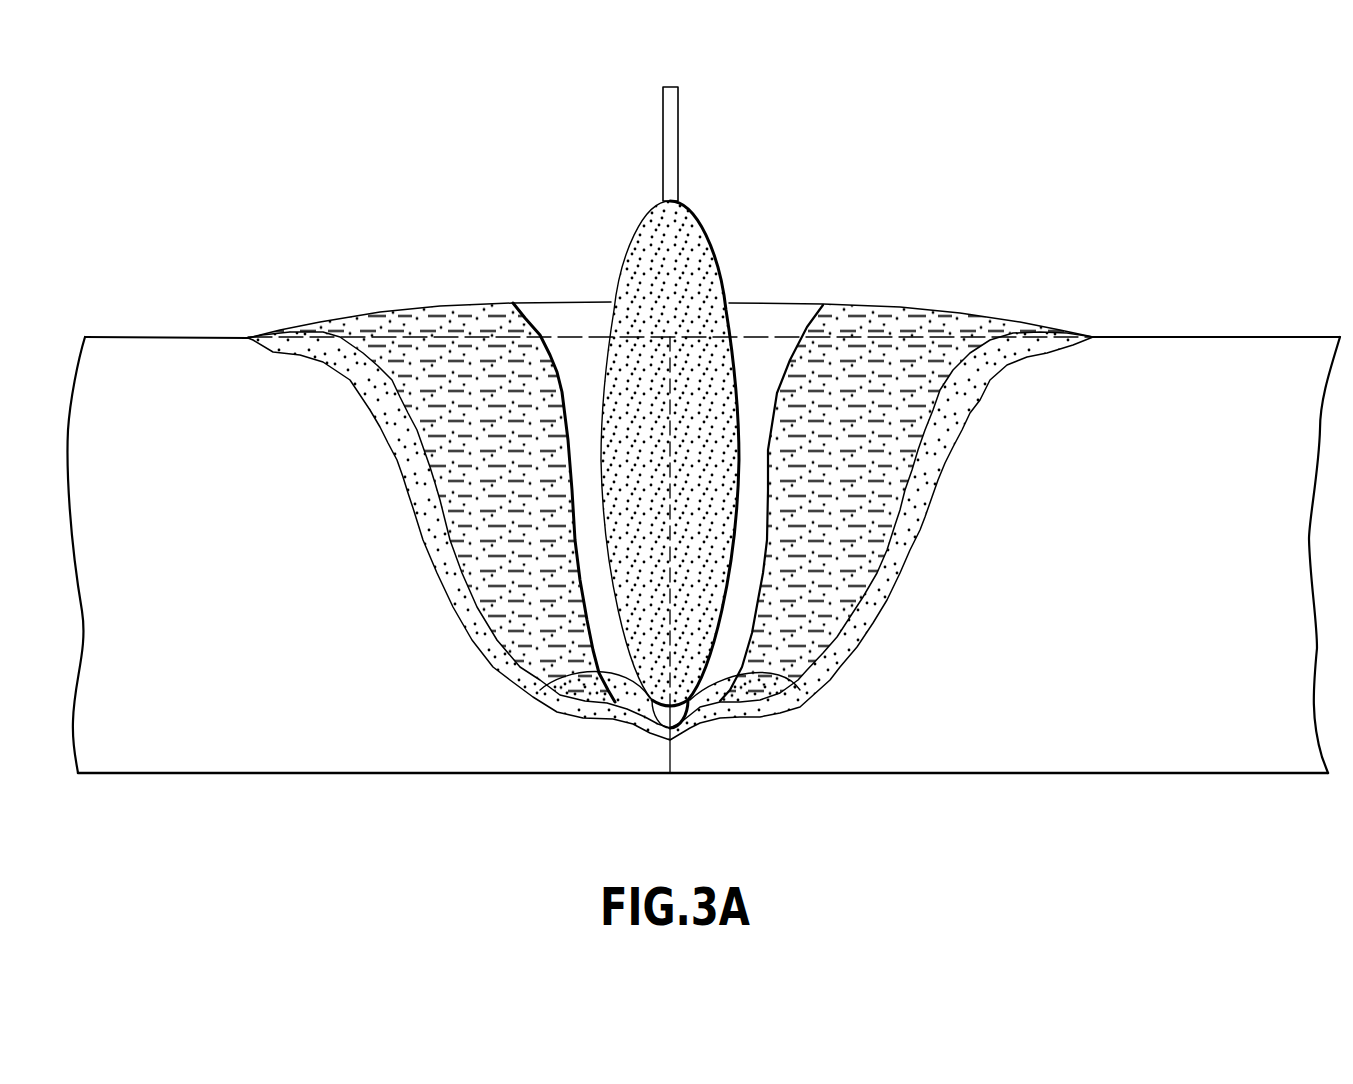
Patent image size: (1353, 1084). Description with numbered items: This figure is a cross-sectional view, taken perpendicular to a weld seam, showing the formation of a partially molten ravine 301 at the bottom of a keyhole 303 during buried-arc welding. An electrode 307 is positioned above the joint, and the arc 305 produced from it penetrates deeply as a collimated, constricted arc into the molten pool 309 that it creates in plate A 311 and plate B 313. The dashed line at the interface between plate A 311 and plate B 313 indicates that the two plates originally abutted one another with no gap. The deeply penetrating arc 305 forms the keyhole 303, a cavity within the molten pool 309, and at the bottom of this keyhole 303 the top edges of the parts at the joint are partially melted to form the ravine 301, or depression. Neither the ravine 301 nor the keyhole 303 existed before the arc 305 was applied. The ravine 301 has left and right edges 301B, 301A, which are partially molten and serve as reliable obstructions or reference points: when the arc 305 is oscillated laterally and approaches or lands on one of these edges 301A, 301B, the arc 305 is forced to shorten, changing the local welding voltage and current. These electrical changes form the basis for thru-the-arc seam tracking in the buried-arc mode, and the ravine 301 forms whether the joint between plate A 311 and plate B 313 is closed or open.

The partially molten ravine 301 is at (682, 730).
The edge of the ravine 301A is at (788, 686).
The edge of the ravine 301B is at (552, 686).
The keyhole 303 is at (765, 318).
The arc 305 is at (718, 430).
The electrode 307 is at (662, 123).
The molten pool 309 is at (922, 322).
The plate A 311 is at (1062, 588).
The plate B 313 is at (269, 588).